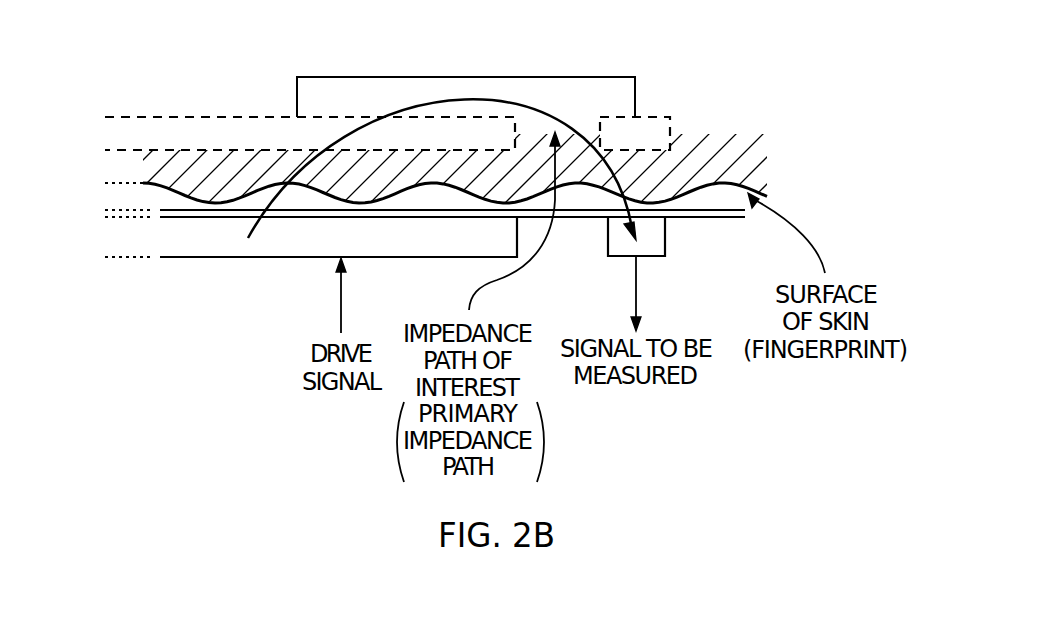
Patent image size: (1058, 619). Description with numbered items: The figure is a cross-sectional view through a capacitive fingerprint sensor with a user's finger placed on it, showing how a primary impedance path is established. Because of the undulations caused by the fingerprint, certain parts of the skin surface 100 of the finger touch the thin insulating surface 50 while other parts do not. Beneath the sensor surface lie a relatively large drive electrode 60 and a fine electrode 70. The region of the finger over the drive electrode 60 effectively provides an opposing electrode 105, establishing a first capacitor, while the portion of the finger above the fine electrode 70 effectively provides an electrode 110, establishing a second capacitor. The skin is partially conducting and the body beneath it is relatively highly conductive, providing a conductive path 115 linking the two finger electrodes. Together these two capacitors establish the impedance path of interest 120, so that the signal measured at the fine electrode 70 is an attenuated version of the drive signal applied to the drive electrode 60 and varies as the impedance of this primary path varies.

The thin insulating surface 50 is at (707, 218).
The drive electrode 60 is at (237, 258).
The fine electrode 70 is at (653, 257).
The surface of the finger 100 is at (734, 180).
The opposing electrode 105 is at (235, 117).
The electrode 110 is at (660, 117).
The conductive path 115 is at (507, 77).
The impedance path of interest 120 is at (545, 117).